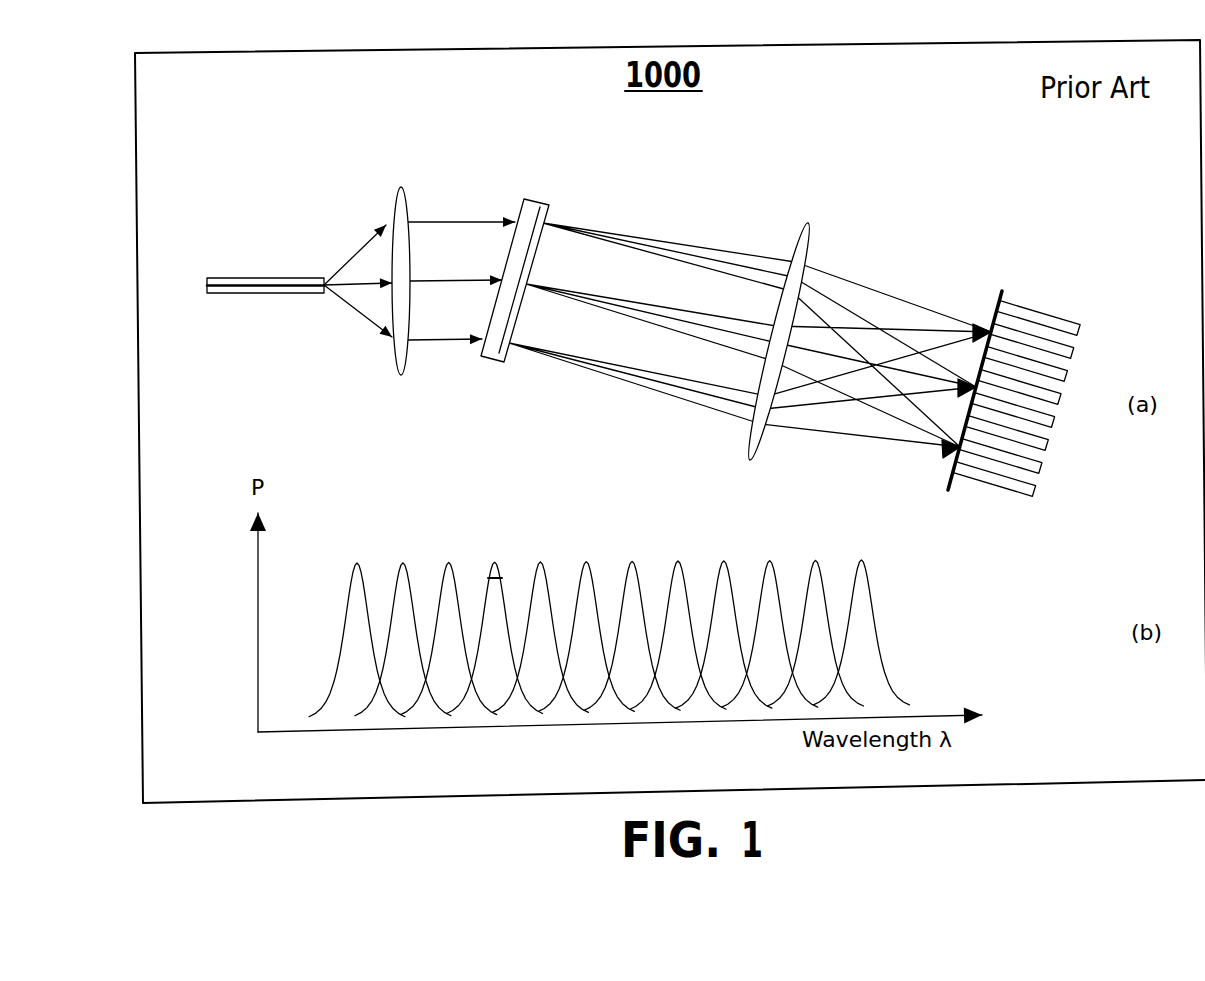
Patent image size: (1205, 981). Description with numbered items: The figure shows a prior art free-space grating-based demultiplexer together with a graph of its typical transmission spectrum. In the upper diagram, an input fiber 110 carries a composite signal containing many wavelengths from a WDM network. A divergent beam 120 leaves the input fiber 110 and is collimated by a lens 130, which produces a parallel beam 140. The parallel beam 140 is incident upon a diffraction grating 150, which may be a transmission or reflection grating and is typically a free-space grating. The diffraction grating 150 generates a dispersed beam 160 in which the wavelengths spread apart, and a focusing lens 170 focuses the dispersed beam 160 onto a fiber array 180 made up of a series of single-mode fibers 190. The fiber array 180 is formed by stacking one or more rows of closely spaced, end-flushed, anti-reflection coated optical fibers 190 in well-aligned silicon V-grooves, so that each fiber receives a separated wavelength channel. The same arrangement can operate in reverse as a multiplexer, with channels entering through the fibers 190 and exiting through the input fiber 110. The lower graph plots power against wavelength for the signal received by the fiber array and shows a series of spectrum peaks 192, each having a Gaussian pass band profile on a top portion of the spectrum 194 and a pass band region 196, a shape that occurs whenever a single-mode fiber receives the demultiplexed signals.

The input fiber 110 is at (250, 293).
The divergent beam 120 is at (357, 278).
The lens 130 is at (393, 223).
The parallel beam 140 is at (443, 257).
The diffraction grating 150 is at (540, 200).
The dispersed beam 160 is at (640, 272).
The focusing lens 170 is at (800, 250).
The fiber array 180 is at (993, 302).
The single-mode fibers 190 is at (1027, 322).
The spectrum peaks 192 is at (678, 577).
The top portion of the spectrum 194 is at (493, 567).
The pass band region 196 is at (500, 575).